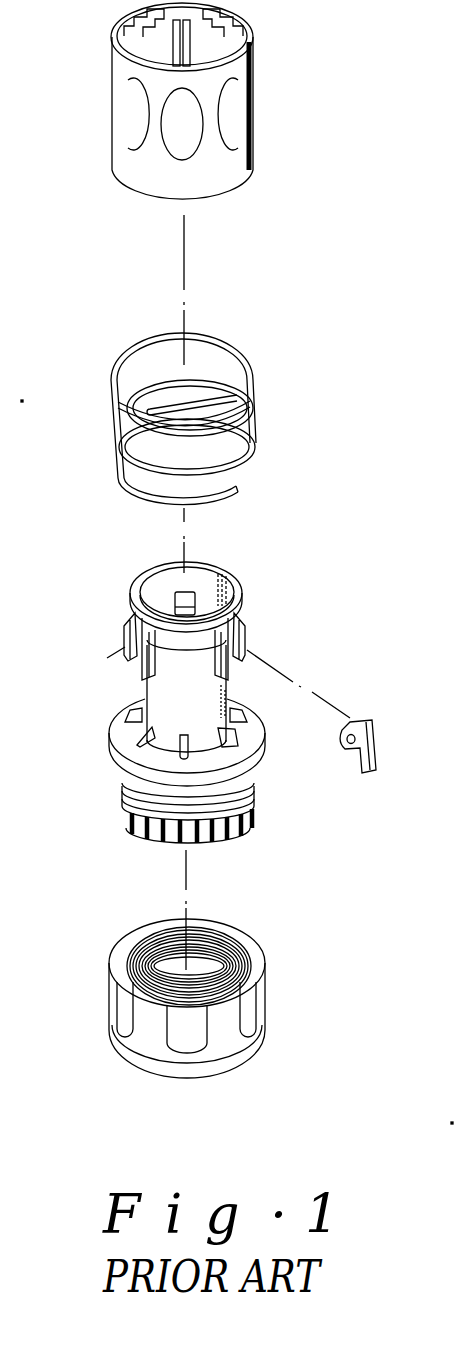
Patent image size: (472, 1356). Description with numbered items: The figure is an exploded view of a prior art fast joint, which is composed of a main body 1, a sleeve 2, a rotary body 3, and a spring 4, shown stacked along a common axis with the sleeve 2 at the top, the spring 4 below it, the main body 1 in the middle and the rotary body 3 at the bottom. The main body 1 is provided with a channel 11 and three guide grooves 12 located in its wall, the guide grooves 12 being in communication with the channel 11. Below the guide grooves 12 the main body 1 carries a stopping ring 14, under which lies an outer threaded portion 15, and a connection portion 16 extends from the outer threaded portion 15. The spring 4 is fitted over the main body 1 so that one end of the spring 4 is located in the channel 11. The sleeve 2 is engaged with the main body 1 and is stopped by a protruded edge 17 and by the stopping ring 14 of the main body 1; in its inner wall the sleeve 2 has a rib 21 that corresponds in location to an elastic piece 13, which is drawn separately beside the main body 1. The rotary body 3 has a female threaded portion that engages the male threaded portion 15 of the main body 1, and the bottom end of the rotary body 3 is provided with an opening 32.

The main body 1 is at (86, 617).
The sleeve 2 is at (253, 166).
The rib 21 is at (192, 50).
The rotary body 3 is at (235, 1042).
The opening 32 is at (207, 1079).
The spring 4 is at (252, 366).
The channel 11 is at (143, 575).
The guide grooves 12 is at (188, 593).
The elastic piece 13 is at (377, 744).
The stopping ring 14 is at (243, 731).
The outer threaded portion 15 is at (250, 797).
The connection portion 16 is at (158, 833).
The protruded edge 17 is at (240, 584).